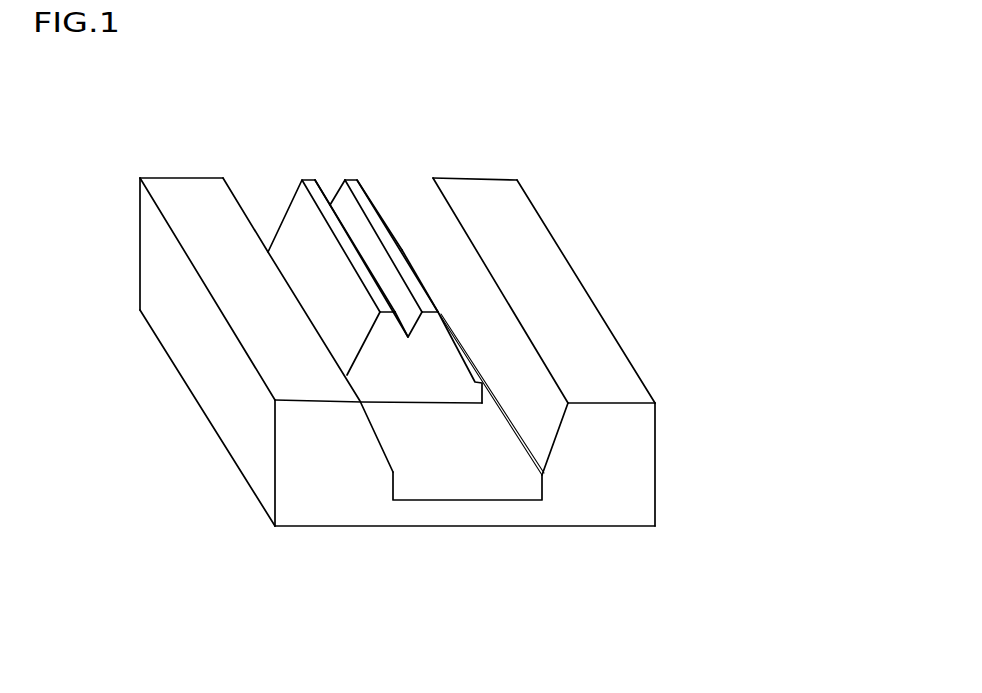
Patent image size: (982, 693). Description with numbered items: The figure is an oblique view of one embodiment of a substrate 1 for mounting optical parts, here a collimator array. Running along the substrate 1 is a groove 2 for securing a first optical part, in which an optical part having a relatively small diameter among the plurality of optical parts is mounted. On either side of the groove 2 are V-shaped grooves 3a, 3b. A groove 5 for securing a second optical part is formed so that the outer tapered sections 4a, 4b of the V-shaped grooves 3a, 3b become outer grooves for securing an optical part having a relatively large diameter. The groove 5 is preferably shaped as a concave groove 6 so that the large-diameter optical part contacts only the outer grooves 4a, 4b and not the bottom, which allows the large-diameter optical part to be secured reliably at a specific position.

The substrate for mounting optical parts 1 is at (542, 190).
The groove for securing a first optical part 2 is at (329, 188).
The V-shaped groove 3a is at (257, 198).
The V-shaped groove 3b is at (395, 192).
The outer tapered section 4a is at (375, 437).
The outer tapered section 4b is at (558, 437).
The groove for securing a second optical part 5 is at (438, 447).
The concave groove 6 is at (542, 488).